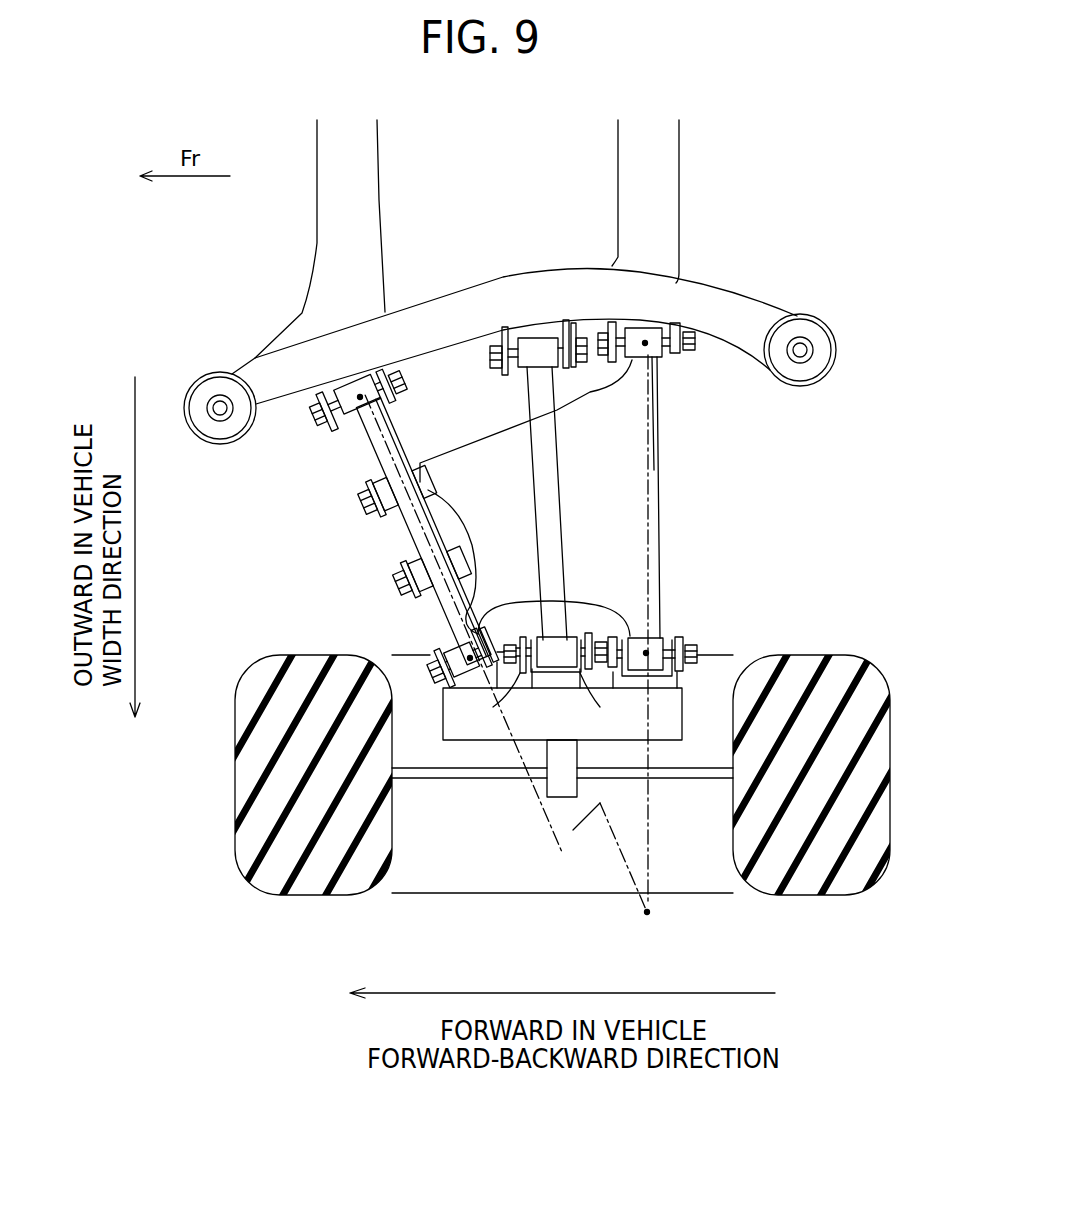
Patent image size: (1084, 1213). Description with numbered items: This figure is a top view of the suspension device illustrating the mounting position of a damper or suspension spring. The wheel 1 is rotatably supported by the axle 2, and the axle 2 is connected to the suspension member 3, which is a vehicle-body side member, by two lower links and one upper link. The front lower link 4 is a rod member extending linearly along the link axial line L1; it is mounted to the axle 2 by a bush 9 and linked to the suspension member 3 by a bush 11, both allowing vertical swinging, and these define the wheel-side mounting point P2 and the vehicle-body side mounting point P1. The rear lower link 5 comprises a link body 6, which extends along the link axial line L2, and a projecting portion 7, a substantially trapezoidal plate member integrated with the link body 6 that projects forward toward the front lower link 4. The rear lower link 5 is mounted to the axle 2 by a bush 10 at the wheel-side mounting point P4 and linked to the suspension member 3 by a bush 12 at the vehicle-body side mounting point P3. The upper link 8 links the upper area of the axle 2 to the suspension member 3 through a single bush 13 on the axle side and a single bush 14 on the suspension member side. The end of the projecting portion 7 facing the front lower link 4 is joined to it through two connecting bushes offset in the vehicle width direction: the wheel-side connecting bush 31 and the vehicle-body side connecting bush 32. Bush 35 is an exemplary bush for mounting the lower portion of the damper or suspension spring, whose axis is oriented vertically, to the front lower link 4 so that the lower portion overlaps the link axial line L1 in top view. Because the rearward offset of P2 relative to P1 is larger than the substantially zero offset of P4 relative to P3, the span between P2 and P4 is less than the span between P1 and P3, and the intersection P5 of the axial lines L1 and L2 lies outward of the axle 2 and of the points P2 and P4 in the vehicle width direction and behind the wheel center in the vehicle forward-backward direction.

The wheel 1 is at (868, 812).
The axle 2 is at (458, 727).
The suspension member 3 is at (415, 318).
The front lower link 4 is at (407, 523).
The rear lower link 5 is at (688, 497).
The link body 6 is at (728, 430).
The projecting portion 7 is at (613, 442).
The upper link 8 is at (543, 480).
The bush 9 is at (450, 650).
The bush 10 is at (660, 637).
The bush 11 is at (345, 405).
The bush 12 is at (630, 336).
The bush 13 is at (553, 680).
The bush 14 is at (535, 348).
The wheel-side connecting bush 31 is at (497, 688).
The vehicle-body side connecting bush 32 is at (377, 478).
The bush 35 is at (413, 560).
The vehicle-body side mounting point P1 is at (362, 397).
The wheel-side mounting point P2 is at (468, 659).
The vehicle-body side mounting point P3 is at (645, 343).
The wheel-side mounting point P4 is at (646, 653).
The intersection P5 is at (631, 869).
The link axial line L1 is at (450, 610).
The link axial line L2 is at (648, 527).